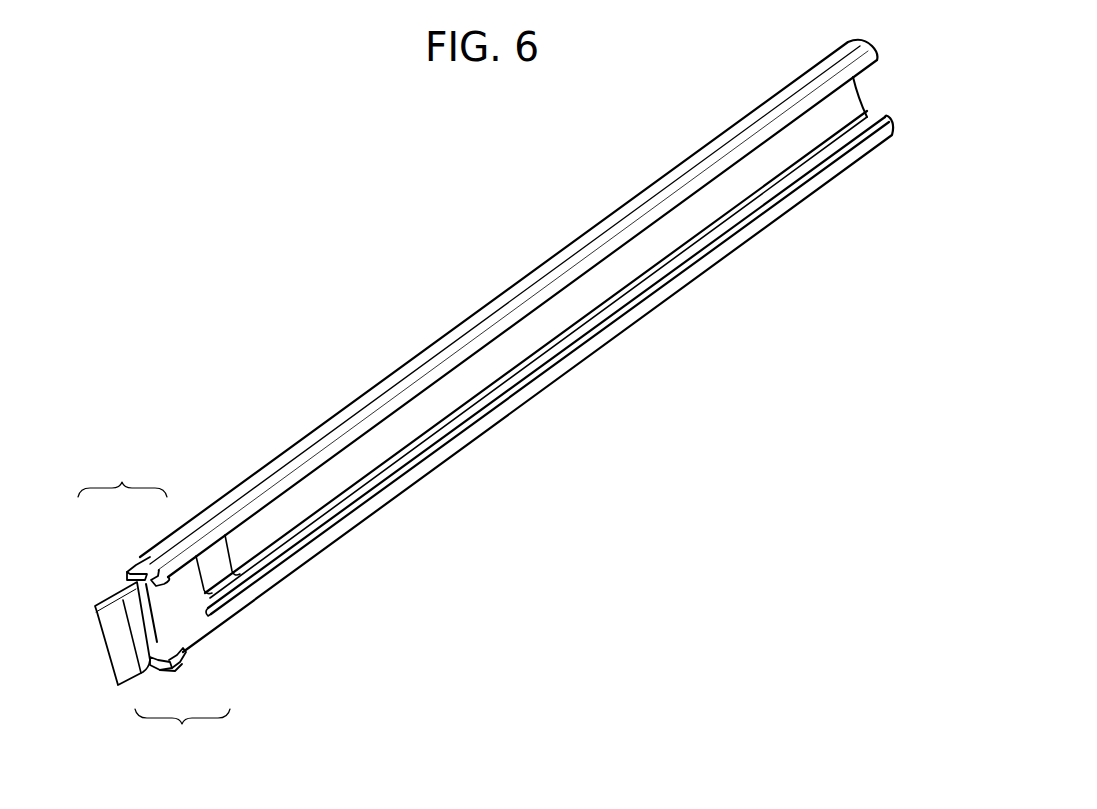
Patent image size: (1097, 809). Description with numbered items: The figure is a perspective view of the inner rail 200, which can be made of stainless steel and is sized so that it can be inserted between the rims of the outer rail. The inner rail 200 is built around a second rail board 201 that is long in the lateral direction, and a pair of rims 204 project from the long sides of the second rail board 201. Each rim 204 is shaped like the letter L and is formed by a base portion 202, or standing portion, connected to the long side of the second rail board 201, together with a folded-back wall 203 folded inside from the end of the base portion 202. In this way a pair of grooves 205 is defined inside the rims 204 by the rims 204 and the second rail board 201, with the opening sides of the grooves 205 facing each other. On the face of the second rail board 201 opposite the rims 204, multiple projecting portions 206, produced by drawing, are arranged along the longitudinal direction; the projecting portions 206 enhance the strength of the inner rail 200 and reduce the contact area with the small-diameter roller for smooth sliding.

The inner rail 200 is at (476, 238).
The second rail board 201 is at (518, 384).
The base portion 202 is at (136, 566).
The folded-back wall 203 is at (164, 562).
The rim 204 is at (154, 607).
The groove 205 is at (138, 590).
The projecting portion 206 is at (398, 434).